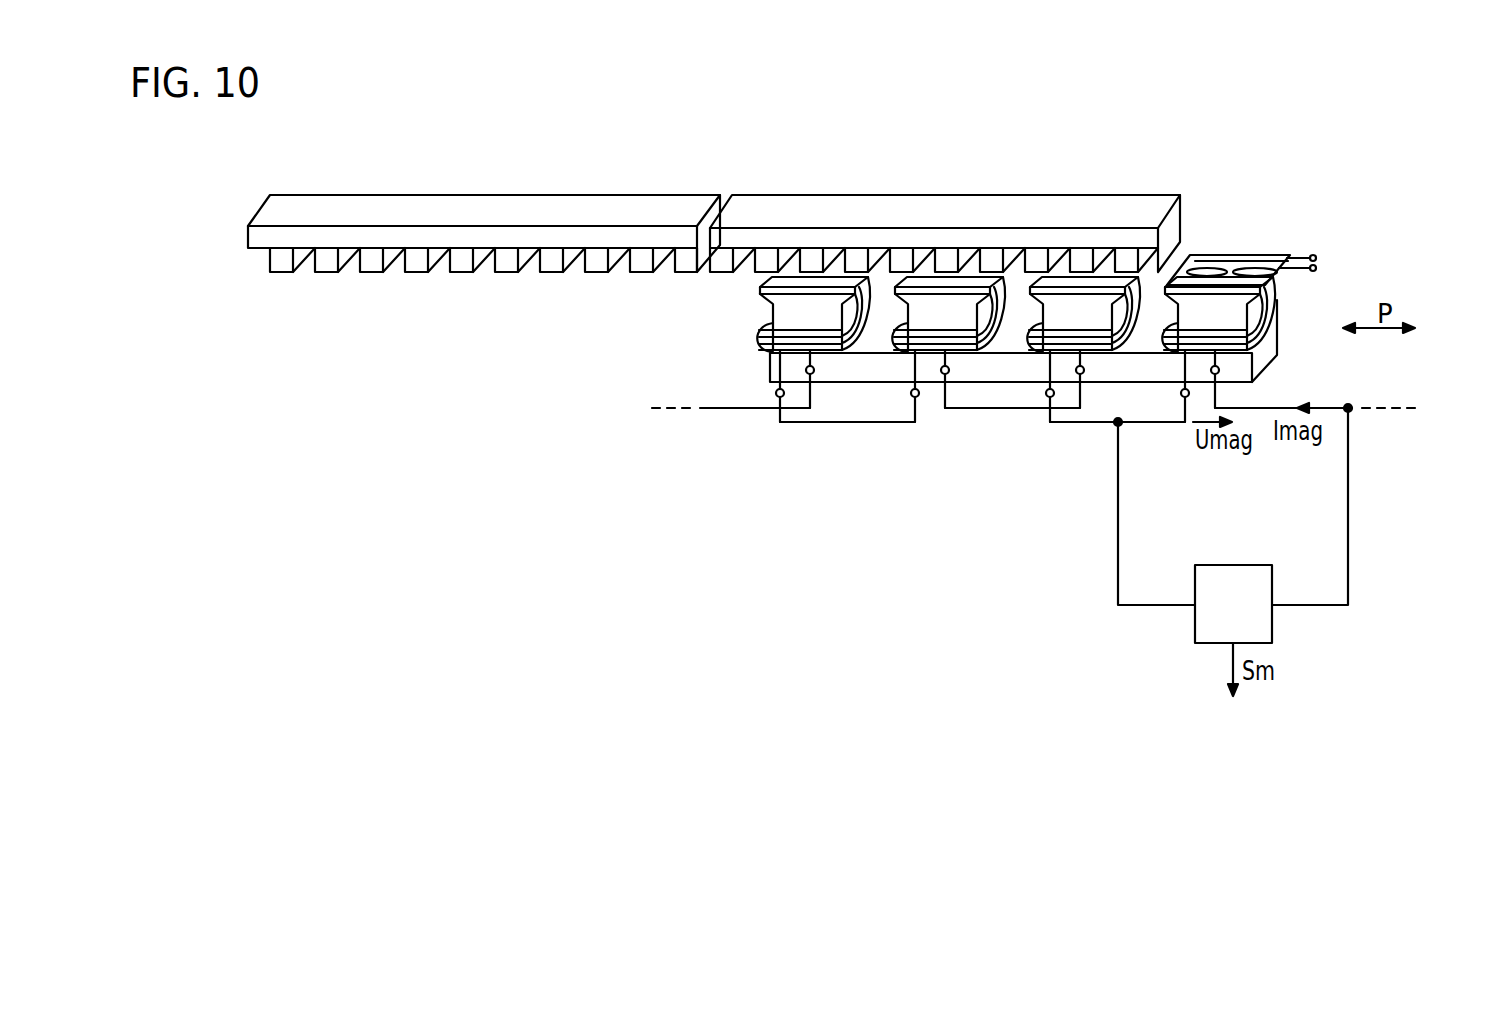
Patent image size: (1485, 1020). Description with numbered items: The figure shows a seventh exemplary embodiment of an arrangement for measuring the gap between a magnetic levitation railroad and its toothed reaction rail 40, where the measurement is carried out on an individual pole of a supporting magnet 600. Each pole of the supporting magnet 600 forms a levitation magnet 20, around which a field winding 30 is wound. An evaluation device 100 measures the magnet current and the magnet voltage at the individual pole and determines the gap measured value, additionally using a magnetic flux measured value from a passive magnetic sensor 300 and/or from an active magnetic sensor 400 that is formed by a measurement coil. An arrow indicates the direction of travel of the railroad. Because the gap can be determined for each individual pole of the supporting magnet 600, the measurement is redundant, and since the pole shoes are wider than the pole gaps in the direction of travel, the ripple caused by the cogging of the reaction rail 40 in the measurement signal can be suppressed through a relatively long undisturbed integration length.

The reaction rail 40 is at (631, 198).
The field winding 30 is at (1280, 315).
The passive magnetic sensor 300 is at (1253, 376).
The levitation magnet 20 is at (1228, 256).
The active magnetic sensor 400 is at (1300, 255).
The supporting magnet 600 is at (925, 373).
The evaluation device 100 is at (1233, 565).